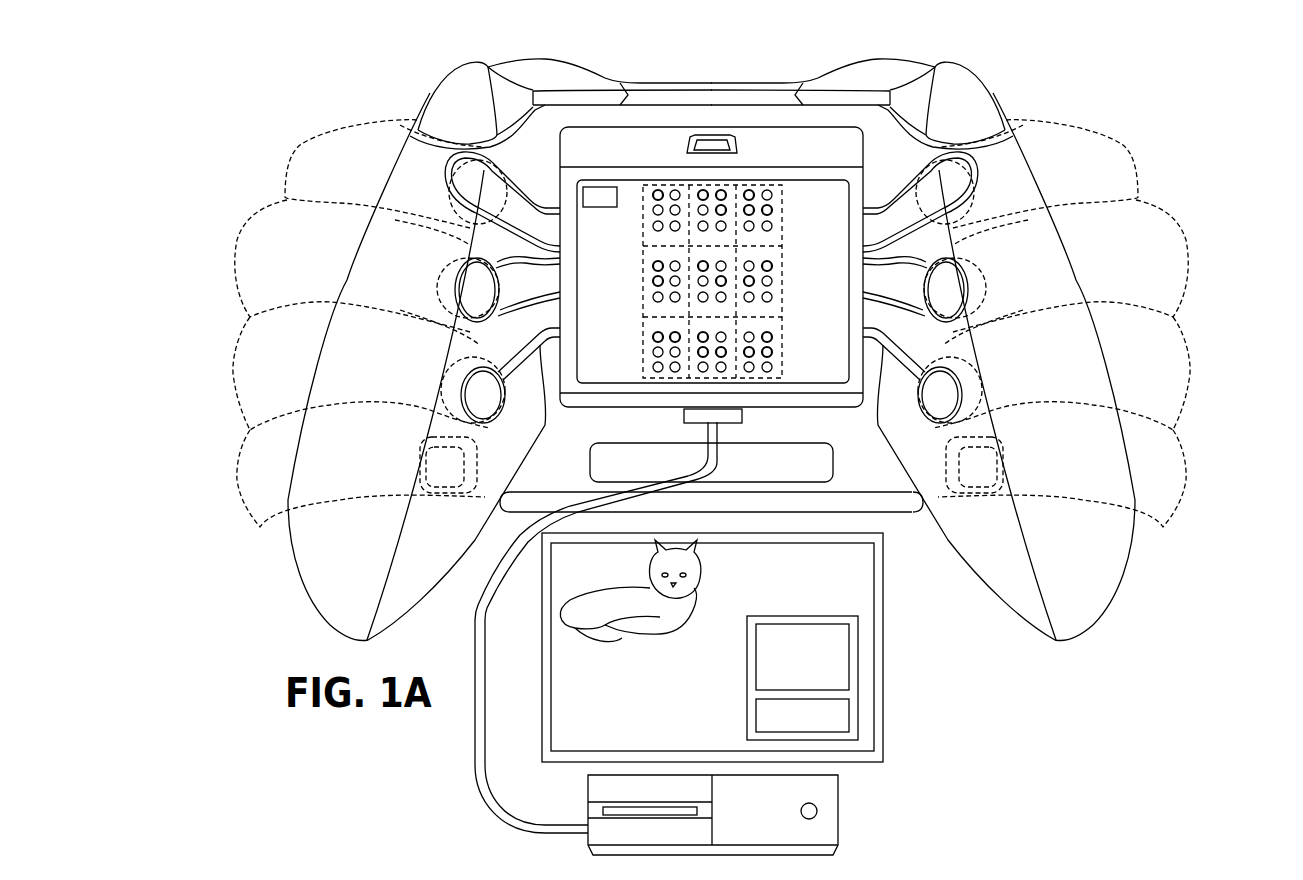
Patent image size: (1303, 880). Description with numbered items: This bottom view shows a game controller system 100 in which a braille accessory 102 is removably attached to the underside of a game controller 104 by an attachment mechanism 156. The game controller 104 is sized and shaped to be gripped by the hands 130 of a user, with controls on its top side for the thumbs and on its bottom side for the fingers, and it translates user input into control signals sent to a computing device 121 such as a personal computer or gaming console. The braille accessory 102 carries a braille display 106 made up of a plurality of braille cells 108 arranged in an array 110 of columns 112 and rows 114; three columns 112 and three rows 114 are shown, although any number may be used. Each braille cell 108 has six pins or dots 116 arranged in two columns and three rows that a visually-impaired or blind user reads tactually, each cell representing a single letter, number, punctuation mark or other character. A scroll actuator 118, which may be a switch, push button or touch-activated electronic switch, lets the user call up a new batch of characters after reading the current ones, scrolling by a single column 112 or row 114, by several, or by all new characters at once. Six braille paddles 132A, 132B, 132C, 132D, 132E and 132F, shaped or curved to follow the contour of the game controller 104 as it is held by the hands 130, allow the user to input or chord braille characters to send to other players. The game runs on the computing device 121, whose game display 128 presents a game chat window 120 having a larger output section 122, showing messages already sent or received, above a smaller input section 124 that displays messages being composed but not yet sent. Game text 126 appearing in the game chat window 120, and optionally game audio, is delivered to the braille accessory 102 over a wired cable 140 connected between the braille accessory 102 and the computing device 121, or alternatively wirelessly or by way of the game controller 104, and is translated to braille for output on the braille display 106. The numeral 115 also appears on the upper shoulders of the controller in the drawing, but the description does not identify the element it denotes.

The game controller system 100 is at (316, 106).
The braille accessory 102 is at (668, 126).
The game controller 104 is at (1080, 273).
The braille display 106 is at (596, 326).
The braille cells 108 is at (784, 214).
The array 110 is at (641, 347).
The columns 112 is at (660, 186).
The rows 114 is at (641, 277).
The bumper 115 is at (460, 72).
The pins or dots 116 is at (767, 190).
The scroll actuator 118 is at (583, 197).
The game chat window 120 is at (803, 616).
The computing device 121 is at (840, 810).
The output section 122 is at (756, 659).
The input section 124 is at (756, 716).
The game text 126 is at (843, 717).
The game display 128 is at (605, 705).
The hands 130 is at (232, 256).
The braille paddle 132A is at (450, 183).
The braille paddle 132B is at (457, 290).
The braille paddle 132C is at (463, 386).
The braille paddle 132D is at (975, 183).
The braille paddle 132E is at (968, 290).
The braille paddle 132F is at (962, 386).
The wired cable 140 is at (745, 418).
The attachment mechanism 156 is at (900, 513).